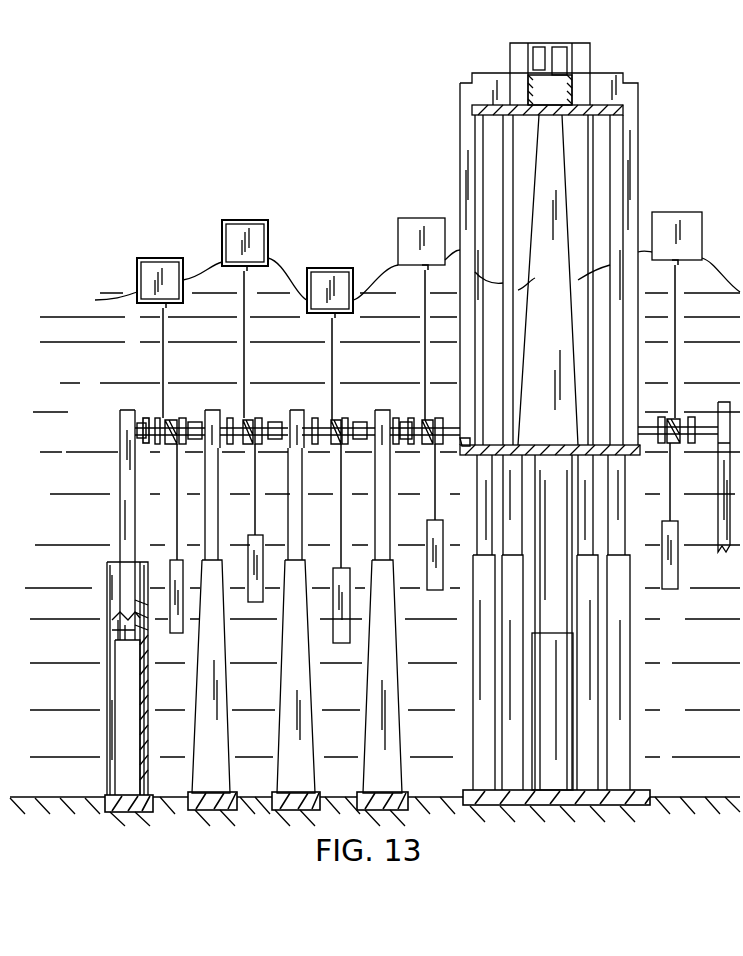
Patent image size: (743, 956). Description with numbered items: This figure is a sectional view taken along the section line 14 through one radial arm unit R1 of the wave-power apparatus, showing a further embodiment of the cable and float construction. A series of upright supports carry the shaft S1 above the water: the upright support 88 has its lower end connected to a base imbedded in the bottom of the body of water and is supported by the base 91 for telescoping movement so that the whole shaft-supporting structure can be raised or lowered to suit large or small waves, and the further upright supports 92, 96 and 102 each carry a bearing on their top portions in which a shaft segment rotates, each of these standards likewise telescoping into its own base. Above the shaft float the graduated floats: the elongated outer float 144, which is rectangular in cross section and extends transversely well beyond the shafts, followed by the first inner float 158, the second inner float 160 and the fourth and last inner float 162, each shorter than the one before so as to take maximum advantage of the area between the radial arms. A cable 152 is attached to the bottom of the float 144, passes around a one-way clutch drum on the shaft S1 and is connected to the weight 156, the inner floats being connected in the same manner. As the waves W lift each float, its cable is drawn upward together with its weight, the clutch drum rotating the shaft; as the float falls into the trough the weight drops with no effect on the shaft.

The section line 14— 14 is at (187, 247).
The upright support 88 is at (125, 428).
The base 91 is at (110, 676).
The upright support 92 is at (224, 398).
The upright support 96 is at (310, 396).
The upright support 102 is at (395, 397).
The outer float 144 is at (147, 275).
The second cable 152 is at (164, 372).
The weight 156 is at (178, 560).
The first inner float 158 is at (245, 236).
The second inner float 160 is at (327, 280).
The fourth inner float 162 is at (418, 230).
The shaft S1 is at (144, 418).
The radial arm unit R1 is at (112, 495).
The waves W is at (272, 262).